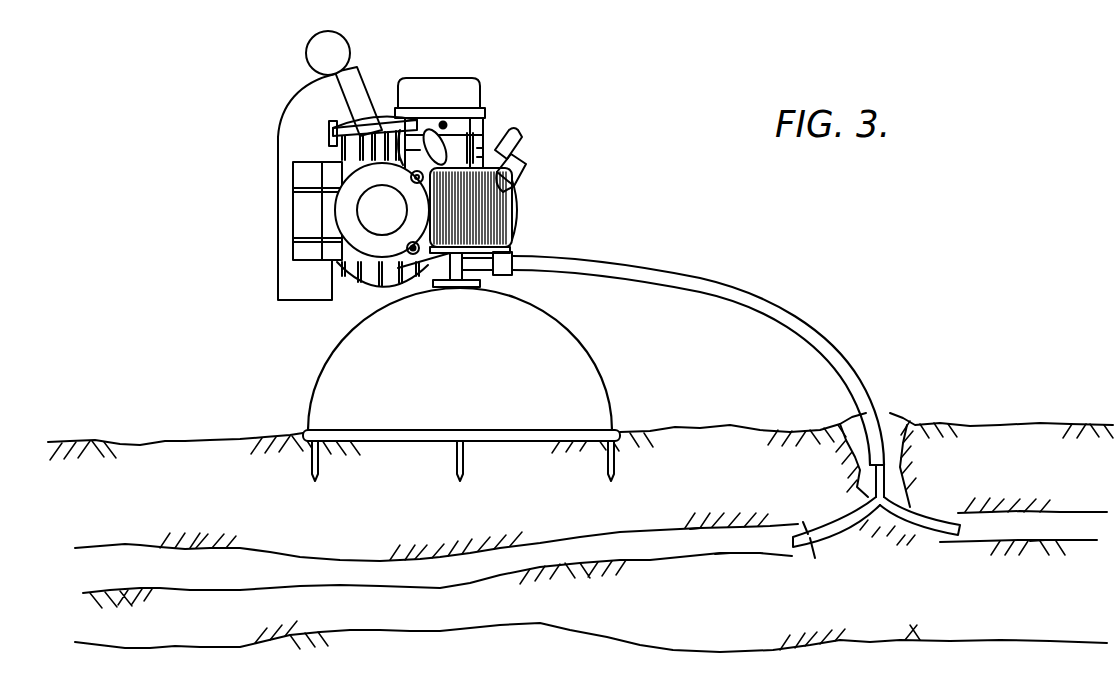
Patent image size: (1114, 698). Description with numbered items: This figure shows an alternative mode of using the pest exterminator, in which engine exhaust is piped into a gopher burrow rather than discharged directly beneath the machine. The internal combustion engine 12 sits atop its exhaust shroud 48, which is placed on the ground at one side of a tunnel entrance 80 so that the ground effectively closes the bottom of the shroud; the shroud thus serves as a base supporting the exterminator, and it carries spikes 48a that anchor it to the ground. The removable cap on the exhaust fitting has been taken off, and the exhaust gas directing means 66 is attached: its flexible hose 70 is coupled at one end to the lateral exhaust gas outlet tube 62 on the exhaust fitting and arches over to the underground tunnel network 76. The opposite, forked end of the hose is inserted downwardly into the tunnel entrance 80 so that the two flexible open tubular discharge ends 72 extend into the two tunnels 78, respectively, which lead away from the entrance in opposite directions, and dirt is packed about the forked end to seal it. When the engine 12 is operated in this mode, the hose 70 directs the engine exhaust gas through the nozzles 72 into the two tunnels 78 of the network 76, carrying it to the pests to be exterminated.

The internal combustion engine 12 is at (482, 92).
The exhaust gas outlet tube 62 is at (483, 272).
The exhaust shroud 48 is at (582, 348).
The spikes 48a is at (604, 463).
The exhaust gas directing means 66 is at (693, 275).
The flexible hose 70 is at (780, 318).
The tunnel entrance 80 is at (898, 467).
The tubular discharge ends 72 is at (877, 547).
The gopher burrow or tunnel network 76 is at (703, 535).
The underground tunnels 78 is at (723, 553).